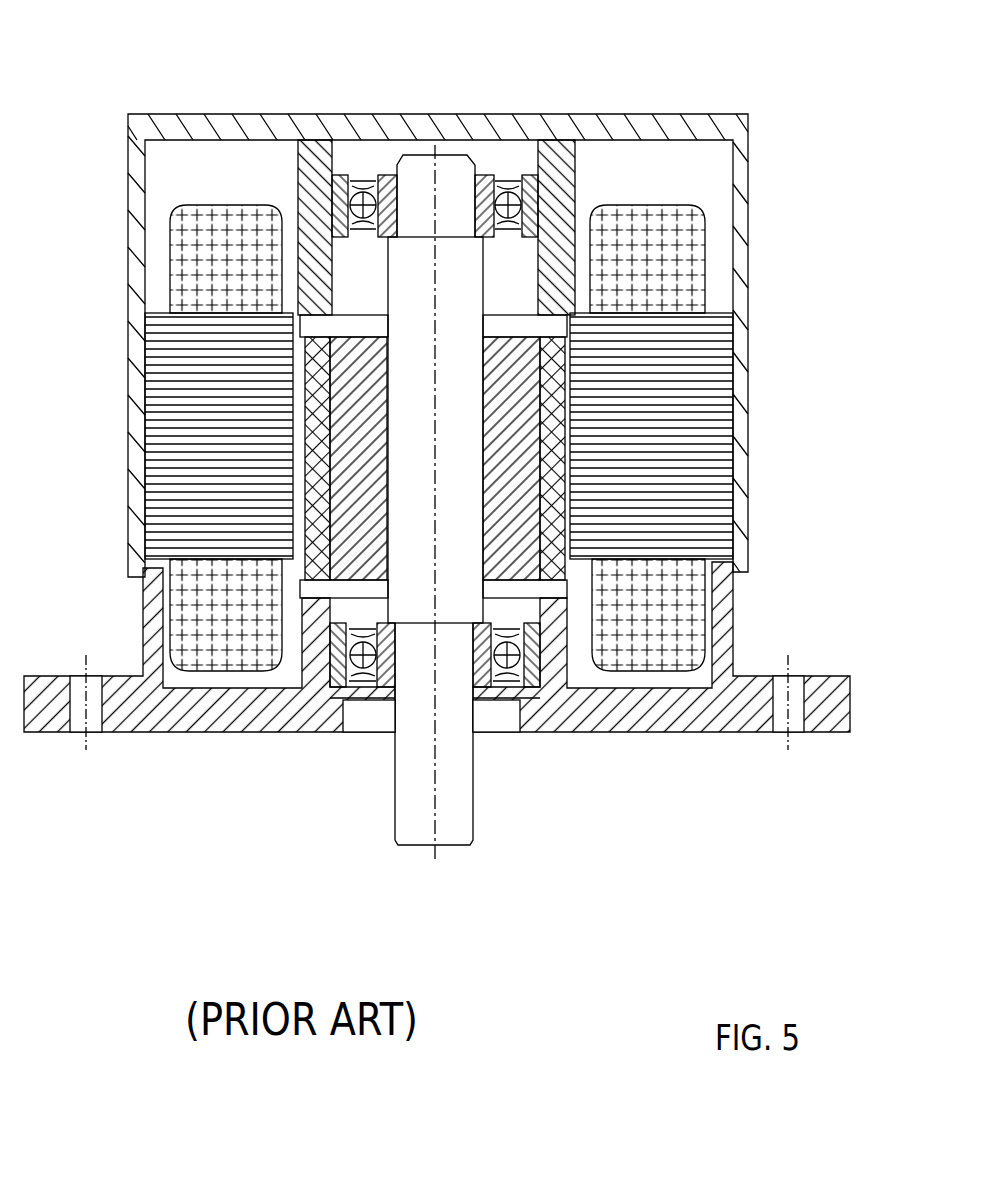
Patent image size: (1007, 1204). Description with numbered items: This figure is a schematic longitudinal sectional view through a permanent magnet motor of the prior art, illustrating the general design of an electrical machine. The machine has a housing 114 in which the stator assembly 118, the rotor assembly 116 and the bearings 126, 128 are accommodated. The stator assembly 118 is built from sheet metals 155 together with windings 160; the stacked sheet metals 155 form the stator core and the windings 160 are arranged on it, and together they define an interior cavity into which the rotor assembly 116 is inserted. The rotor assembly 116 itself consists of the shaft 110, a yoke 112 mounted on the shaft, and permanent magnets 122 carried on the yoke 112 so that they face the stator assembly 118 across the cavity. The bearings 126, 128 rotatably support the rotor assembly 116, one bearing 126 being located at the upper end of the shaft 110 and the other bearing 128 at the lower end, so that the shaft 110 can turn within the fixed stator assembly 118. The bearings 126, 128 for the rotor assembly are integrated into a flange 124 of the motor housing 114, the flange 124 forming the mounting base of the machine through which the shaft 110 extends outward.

The shaft 110 is at (452, 774).
The yoke 112 is at (510, 517).
The housing 114 is at (658, 117).
The rotor assembly 116 is at (372, 114).
The stator assembly 118 is at (201, 170).
The permanent magnets 122 is at (553, 433).
The flange 124 is at (196, 736).
The bearing 126 is at (512, 208).
The bearing 128 is at (540, 662).
The sheet metals 155 is at (717, 326).
The windings 160 is at (657, 268).